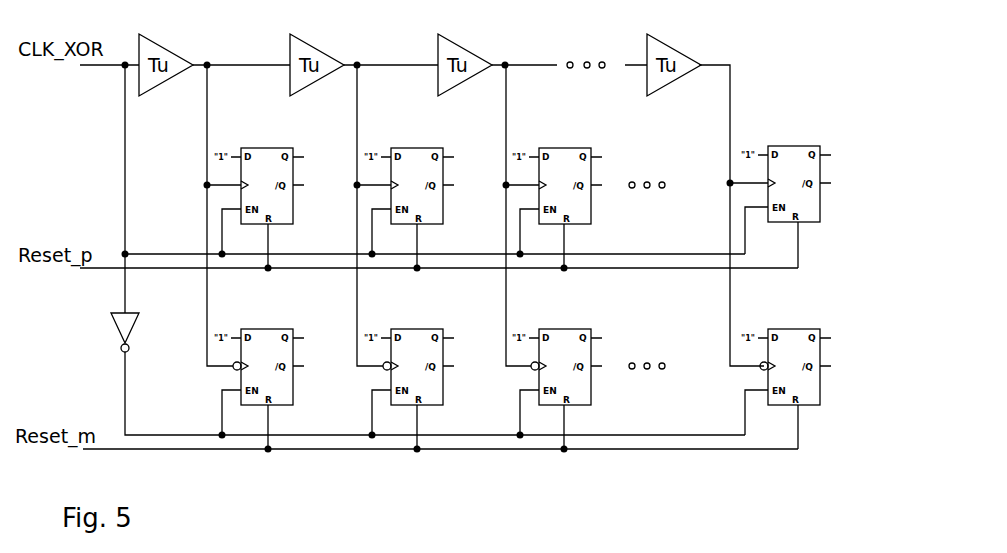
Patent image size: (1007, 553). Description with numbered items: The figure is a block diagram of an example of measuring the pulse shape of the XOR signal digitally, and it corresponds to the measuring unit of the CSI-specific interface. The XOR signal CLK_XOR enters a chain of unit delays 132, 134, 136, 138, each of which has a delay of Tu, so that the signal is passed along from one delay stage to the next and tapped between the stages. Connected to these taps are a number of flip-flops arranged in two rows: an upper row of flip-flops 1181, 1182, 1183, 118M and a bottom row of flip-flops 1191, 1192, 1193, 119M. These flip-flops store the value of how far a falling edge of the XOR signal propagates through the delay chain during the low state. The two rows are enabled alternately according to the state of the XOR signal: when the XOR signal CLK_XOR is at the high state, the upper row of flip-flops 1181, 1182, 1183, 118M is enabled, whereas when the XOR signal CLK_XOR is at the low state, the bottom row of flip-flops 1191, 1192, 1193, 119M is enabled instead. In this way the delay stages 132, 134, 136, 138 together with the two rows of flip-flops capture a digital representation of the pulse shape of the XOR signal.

The unit delay 132 is at (162, 46).
The unit delay 134 is at (313, 46).
The unit delay 136 is at (462, 46).
The unit delay 138 is at (674, 46).
The flip-flop 1181 is at (252, 148).
The flip-flop 1182 is at (402, 148).
The flip-flop 1183 is at (550, 148).
The flip-flop 118M is at (780, 146).
The flip-flop 1191 is at (252, 329).
The flip-flop 1192 is at (402, 329).
The flip-flop 1193 is at (550, 329).
The flip-flop 119M is at (778, 329).